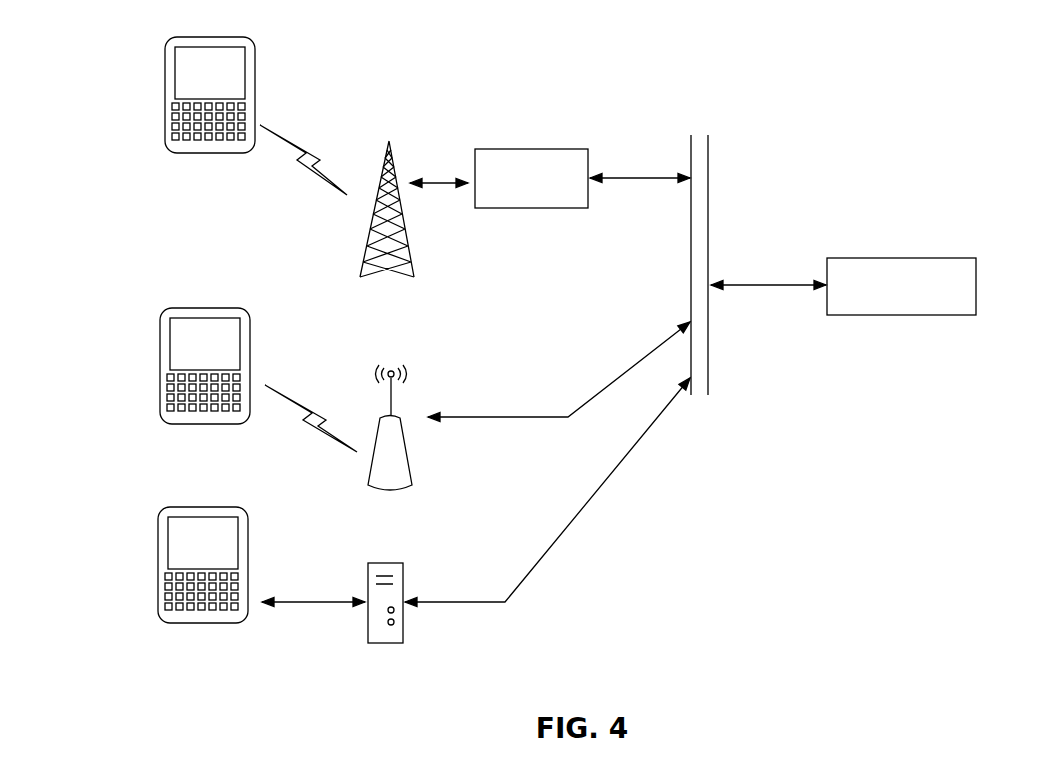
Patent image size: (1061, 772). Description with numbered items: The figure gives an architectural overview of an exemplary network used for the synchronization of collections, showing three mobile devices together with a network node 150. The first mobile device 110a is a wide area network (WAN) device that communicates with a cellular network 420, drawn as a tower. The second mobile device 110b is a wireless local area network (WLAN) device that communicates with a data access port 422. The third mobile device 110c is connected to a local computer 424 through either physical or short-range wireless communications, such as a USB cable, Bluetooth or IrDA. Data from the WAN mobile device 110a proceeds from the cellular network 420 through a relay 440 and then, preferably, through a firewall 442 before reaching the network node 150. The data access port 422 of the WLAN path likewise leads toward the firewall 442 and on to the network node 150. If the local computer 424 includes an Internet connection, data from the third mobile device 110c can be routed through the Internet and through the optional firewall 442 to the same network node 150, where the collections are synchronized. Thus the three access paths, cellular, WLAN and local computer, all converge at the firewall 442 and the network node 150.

The mobile device 110a is at (257, 55).
The mobile device 110b is at (253, 328).
The mobile device 110c is at (256, 530).
The cellular network 420 is at (416, 268).
The data access port 422 is at (410, 492).
The computer 424 is at (405, 620).
The relay 440 is at (563, 149).
The firewall 442 is at (709, 152).
The network node 150 is at (977, 290).